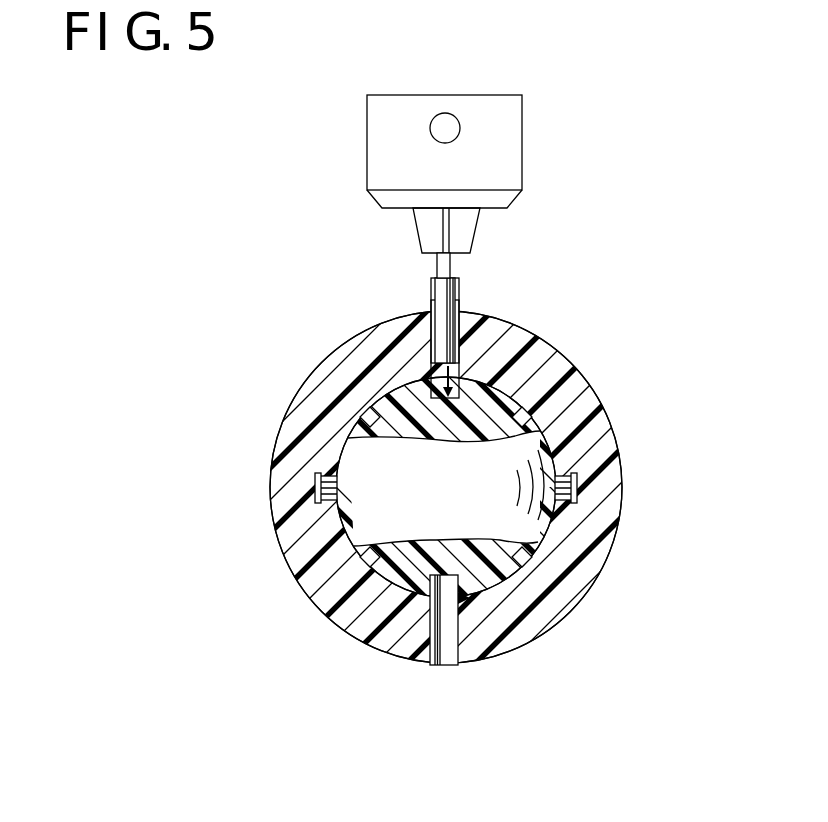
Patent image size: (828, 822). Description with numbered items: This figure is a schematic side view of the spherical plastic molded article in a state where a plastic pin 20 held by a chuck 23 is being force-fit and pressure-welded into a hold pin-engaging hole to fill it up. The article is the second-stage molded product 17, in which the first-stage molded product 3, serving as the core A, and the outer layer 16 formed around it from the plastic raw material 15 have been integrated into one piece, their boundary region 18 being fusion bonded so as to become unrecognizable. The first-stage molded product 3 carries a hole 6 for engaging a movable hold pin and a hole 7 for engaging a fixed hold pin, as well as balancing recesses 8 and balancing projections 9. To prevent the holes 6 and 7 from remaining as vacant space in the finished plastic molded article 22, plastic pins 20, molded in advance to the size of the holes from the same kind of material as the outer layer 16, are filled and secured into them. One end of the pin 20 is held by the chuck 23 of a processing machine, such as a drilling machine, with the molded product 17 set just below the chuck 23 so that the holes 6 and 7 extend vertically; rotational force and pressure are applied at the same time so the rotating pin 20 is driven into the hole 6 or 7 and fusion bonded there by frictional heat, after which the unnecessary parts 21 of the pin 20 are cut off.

The chuck 23 is at (507, 152).
The unnecessary parts 21 is at (447, 268).
The plastic pin 20 is at (462, 298).
The hole for engaging a fixed hold pin 7 is at (428, 352).
The second-stage molded product 17 is at (426, 464).
The plastic molded article 22 is at (340, 320).
The outer layer 16 is at (452, 490).
The plastic raw material 15 is at (310, 543).
The balancing recesses 8 is at (360, 412).
The balancing projections 9 is at (317, 486).
The hole for engaging a movable hold pin 6 is at (433, 622).
The boundary region 18 is at (493, 584).
The first-stage molded product 3 is at (337, 645).
The core A is at (370, 592).